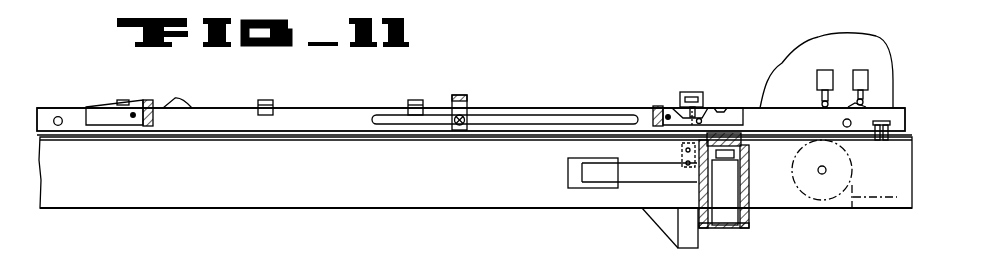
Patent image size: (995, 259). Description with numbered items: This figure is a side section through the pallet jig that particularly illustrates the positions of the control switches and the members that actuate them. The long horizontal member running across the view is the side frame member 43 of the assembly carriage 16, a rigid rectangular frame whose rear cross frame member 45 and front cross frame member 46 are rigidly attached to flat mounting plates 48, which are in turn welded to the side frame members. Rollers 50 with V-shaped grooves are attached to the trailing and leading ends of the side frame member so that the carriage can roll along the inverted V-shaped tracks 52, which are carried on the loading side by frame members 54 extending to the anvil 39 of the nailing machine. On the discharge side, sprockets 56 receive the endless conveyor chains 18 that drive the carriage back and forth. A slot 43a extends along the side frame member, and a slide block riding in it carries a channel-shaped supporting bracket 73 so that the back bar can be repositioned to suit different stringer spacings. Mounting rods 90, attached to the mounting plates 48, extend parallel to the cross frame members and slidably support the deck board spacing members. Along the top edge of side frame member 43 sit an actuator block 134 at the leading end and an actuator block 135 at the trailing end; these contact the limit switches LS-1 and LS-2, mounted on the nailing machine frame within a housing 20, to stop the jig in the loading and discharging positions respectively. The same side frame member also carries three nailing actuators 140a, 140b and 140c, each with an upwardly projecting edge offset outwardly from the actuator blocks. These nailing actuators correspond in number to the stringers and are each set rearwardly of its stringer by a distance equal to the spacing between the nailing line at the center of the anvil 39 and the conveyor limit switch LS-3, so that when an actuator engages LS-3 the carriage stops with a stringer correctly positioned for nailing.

The assembly carriage 16 is at (47, 105).
The endless conveyor chains 18 is at (876, 159).
The limit switch housing 20 is at (787, 40).
The anvil 39 is at (748, 141).
The side frame member 43 is at (297, 113).
The slot 43a is at (503, 123).
The rear cross frame member 45 is at (143, 100).
The front cross frame member 46 is at (650, 107).
The mounting plate 48 is at (102, 121).
The roller 50 is at (57, 135).
The inverted V-shaped track 52 is at (280, 140).
The frame member 54 is at (155, 198).
The sprocket 56 is at (852, 214).
The channel-shaped supporting bracket 73 is at (460, 95).
The mounting rod 90 is at (134, 118).
The actuator block 134 is at (853, 104).
The actuator block 135 is at (180, 100).
The nailing actuator 140a is at (412, 100).
The nailing actuator 140b is at (263, 100).
The nailing actuator 140c is at (117, 102).
The limit switch LS-1 is at (858, 72).
The limit switch LS-2 is at (817, 75).
The conveyor limit switch LS-3 is at (690, 92).